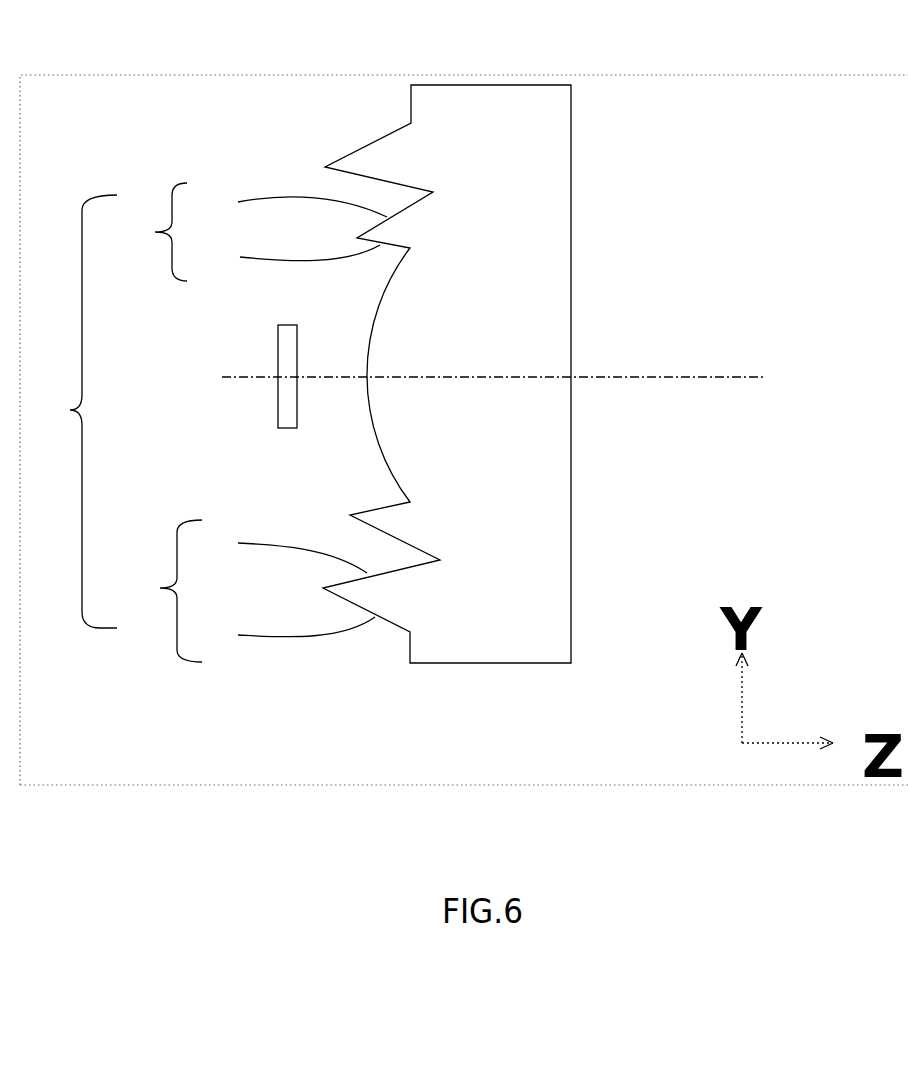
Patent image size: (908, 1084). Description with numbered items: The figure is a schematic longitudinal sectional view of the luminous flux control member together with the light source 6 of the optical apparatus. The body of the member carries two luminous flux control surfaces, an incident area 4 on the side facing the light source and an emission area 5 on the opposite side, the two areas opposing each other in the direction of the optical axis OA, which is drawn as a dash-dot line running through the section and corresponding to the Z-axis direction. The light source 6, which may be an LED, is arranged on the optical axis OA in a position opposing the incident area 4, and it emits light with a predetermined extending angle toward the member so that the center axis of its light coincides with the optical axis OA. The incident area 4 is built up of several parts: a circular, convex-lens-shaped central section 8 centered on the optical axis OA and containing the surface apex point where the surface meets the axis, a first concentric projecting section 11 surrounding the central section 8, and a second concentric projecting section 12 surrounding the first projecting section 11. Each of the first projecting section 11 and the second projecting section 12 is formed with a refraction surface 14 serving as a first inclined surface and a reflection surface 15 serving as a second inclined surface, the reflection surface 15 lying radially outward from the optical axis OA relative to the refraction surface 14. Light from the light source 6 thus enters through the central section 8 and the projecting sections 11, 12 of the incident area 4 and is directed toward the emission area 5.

The incident area 4 is at (63, 425).
The emission area 5 is at (572, 312).
The light source 6 is at (276, 360).
The central section 8 is at (372, 438).
The first projecting section 11 is at (153, 246).
The second projecting section 12 is at (158, 600).
The refraction surface 14 is at (283, 408).
The reflection surface 15 is at (287, 423).
The optical axis OA is at (605, 378).